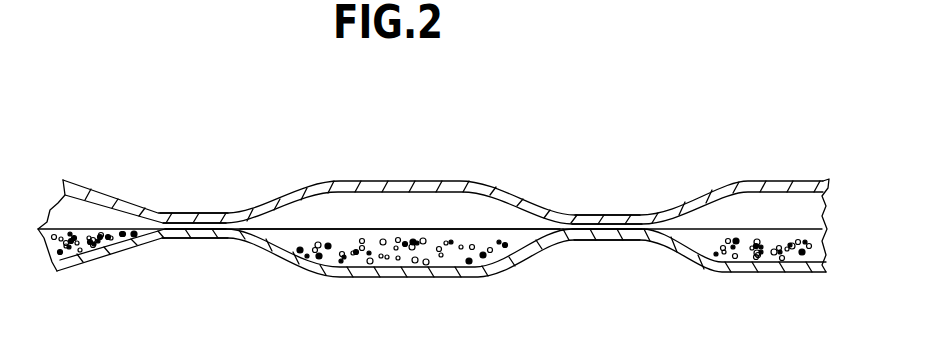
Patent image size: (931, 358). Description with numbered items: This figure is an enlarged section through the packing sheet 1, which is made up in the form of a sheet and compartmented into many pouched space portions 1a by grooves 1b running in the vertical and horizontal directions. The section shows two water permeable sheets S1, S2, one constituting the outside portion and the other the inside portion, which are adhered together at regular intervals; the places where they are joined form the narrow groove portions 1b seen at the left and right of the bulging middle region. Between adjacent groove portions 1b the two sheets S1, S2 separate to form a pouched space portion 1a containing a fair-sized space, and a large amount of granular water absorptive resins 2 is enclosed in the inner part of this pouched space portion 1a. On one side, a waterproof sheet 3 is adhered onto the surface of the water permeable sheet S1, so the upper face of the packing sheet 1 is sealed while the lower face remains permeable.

The packing sheet 1 is at (376, 177).
The pouched space portion 1a is at (460, 205).
The groove portion 1b is at (196, 239).
The granular water absorptive resin 2 is at (512, 270).
The waterproof sheet 3 is at (325, 181).
The water permeable sheet S1 is at (258, 211).
The water permeable sheet S2 is at (332, 275).